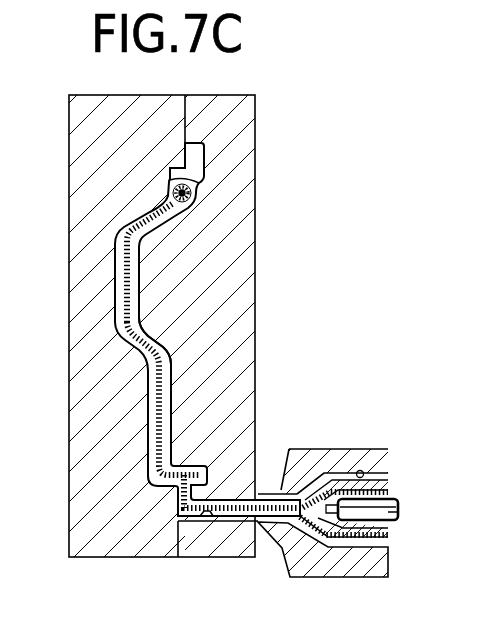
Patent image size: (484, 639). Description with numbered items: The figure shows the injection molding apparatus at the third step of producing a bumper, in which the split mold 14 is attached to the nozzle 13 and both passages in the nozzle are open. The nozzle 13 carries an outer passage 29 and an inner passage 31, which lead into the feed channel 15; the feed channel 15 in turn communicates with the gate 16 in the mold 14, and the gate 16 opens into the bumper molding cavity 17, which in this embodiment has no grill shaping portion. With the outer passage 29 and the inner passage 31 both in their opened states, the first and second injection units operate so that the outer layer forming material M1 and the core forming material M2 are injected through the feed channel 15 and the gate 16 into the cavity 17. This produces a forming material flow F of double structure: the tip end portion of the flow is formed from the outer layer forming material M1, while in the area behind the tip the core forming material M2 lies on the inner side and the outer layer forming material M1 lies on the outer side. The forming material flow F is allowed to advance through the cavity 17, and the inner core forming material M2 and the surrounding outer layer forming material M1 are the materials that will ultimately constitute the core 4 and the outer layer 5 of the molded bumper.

The split mold 14 is at (243, 187).
The gate 16 is at (207, 522).
The core 4 is at (123, 285).
The outer layer 5 is at (172, 212).
The core forming material M2 is at (118, 337).
The bumper molding cavity 17 is at (157, 380).
The outer layer forming material M1 is at (165, 415).
The feed channel 15 is at (265, 503).
The nozzle 13 is at (330, 450).
The outer passage 29 is at (368, 471).
The inner passage 31 is at (362, 524).
The forming material flow F is at (234, 540).